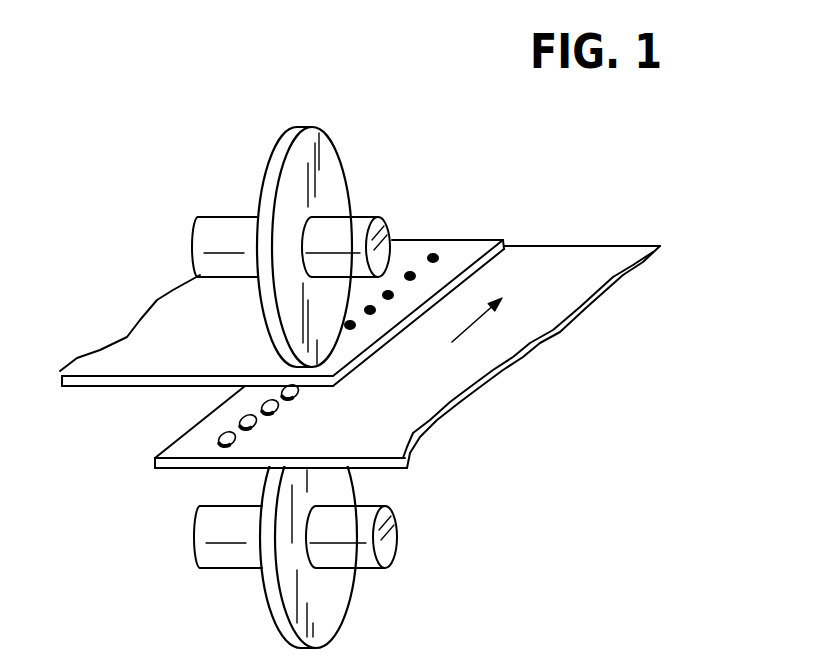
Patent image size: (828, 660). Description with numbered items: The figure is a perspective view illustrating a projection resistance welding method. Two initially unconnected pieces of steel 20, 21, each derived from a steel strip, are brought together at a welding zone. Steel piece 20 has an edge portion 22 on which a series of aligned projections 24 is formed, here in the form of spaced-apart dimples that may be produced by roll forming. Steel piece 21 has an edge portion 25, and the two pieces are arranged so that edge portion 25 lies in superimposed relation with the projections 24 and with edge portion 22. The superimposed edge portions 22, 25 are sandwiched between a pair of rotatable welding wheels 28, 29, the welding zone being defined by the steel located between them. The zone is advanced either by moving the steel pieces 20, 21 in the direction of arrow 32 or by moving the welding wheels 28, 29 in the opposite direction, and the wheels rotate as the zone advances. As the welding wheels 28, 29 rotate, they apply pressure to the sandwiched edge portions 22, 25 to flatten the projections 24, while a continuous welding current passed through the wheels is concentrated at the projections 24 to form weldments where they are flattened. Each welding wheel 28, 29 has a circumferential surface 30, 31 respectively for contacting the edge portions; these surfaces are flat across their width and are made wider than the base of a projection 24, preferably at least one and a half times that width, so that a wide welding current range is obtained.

The steel piece 20 is at (562, 282).
The steel piece 21 is at (140, 347).
The edge portion 22 is at (193, 440).
The aligned projections 24 is at (253, 423).
The edge portion 25 is at (461, 250).
The welding wheel 28 is at (327, 605).
The welding wheel 29 is at (323, 163).
The circumferential surface 30 is at (280, 617).
The circumferential surface 31 is at (281, 152).
The arrow 32 is at (457, 337).